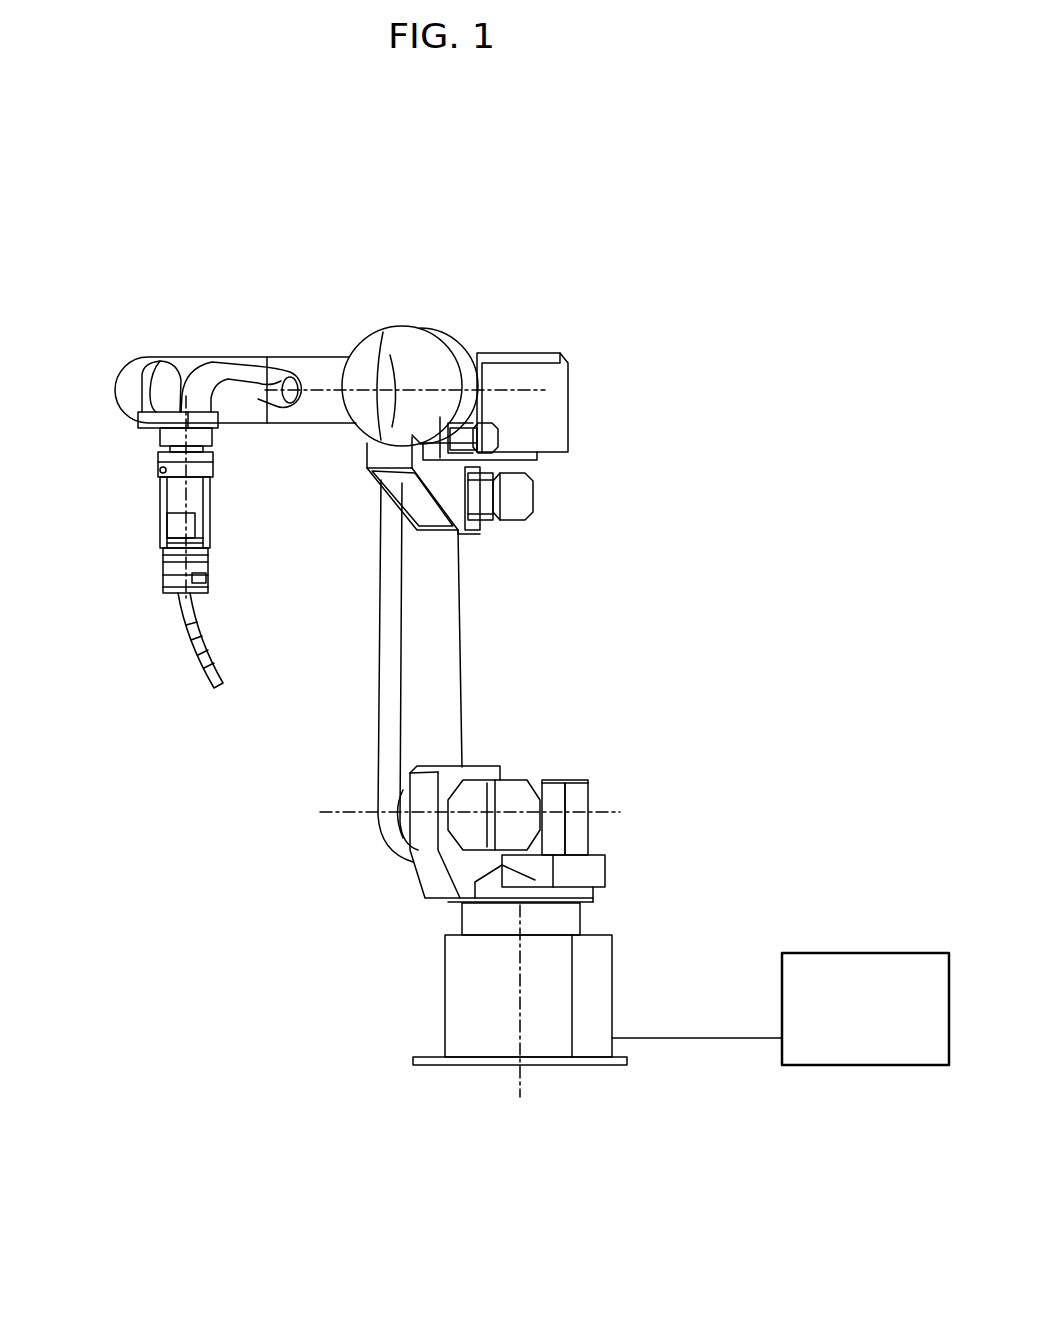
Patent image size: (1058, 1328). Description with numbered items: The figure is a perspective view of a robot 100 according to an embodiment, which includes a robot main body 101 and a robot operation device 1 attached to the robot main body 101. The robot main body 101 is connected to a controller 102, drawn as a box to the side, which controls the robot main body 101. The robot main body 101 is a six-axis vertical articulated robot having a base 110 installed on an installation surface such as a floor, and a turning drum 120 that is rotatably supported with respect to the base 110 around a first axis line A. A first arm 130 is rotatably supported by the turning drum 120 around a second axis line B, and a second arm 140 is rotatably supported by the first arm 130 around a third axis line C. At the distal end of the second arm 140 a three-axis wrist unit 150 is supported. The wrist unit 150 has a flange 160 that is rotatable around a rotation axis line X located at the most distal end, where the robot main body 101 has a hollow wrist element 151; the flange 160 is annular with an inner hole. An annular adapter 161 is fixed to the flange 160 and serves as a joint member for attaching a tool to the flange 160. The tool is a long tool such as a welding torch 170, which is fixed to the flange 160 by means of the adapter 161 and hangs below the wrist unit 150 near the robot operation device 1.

The robot 100 is at (725, 228).
The robot main body 101 is at (602, 338).
The controller 102 is at (863, 952).
The base 110 is at (612, 962).
The turning drum 120 is at (432, 873).
The first arm 130 is at (443, 643).
The second arm 140 is at (395, 340).
The wrist unit 150 is at (112, 360).
The wrist element 151 is at (218, 424).
The flange 160 is at (158, 452).
The adapter 161 is at (160, 472).
The robot operation device 1 is at (150, 575).
The welding torch 170 is at (188, 671).
The first axis line A is at (523, 1085).
The second axis line B is at (328, 812).
The third axis line C is at (510, 388).
The rotation axis line X is at (138, 419).